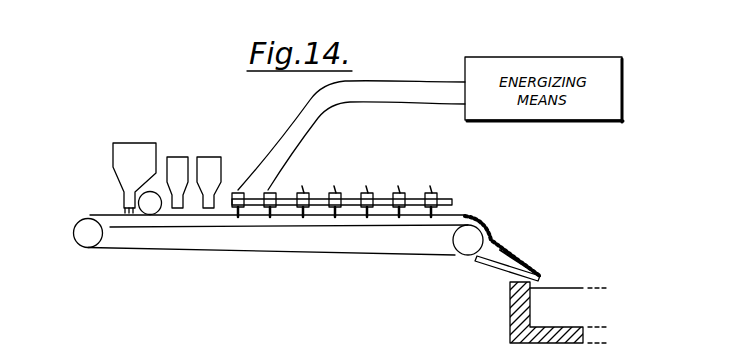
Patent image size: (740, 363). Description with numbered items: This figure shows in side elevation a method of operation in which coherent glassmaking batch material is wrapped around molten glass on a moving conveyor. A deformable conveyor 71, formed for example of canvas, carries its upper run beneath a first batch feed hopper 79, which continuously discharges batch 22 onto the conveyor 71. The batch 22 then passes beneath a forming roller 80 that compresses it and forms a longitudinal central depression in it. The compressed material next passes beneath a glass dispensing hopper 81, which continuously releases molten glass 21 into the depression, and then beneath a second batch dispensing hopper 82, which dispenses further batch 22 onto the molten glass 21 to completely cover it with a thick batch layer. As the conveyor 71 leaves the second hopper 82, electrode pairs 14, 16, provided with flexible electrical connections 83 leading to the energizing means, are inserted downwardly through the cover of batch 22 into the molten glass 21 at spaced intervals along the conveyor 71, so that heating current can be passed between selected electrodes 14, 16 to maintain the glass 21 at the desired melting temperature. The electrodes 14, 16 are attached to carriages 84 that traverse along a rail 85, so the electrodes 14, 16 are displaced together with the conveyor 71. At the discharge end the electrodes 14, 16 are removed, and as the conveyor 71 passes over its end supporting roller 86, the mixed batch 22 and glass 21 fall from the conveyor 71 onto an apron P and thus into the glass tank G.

The electrode 14 is at (232, 216).
The electrode 16 is at (270, 216).
The molten glass 21 is at (499, 258).
The batch 22 is at (116, 211).
The deformable conveyor 71 is at (111, 226).
The first batch feed hopper 79 is at (146, 155).
The forming roller 80 is at (151, 206).
The glass dispensing hopper 81 is at (176, 172).
The second batch dispensing hopper 82 is at (207, 172).
The flexible electrical connections 83 is at (237, 190).
The carriages 84 is at (423, 198).
The rail 85 is at (350, 198).
The end supporting roller 86 is at (473, 230).
The apron P is at (497, 265).
The glass tank G is at (540, 313).